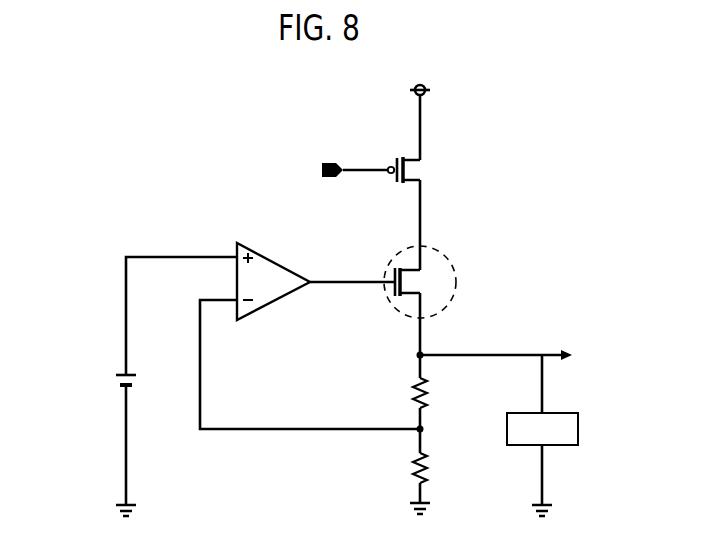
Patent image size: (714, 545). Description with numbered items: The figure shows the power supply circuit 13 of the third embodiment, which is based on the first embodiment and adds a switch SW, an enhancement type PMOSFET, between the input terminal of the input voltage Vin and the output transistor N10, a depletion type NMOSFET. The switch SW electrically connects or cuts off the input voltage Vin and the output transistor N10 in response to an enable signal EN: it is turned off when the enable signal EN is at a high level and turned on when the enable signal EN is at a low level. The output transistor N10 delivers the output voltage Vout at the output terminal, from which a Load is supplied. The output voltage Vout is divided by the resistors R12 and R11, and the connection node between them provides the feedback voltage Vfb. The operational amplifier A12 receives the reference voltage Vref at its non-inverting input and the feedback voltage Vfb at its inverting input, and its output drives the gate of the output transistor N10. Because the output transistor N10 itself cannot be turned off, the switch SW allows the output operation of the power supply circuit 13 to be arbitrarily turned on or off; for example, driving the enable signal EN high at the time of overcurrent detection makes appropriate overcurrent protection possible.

The power supply circuit 13 is at (52, 167).
The operational amplifier A12 is at (277, 260).
The switch SW is at (432, 213).
The output transistor N10 is at (394, 312).
The resistor R12 is at (449, 415).
The resistor R11 is at (448, 483).
The input voltage Vin is at (417, 111).
The output voltage Vout is at (517, 357).
The enable signal EN is at (353, 159).
The reference voltage Vref is at (170, 376).
The feedback voltage Vfb is at (310, 364).
The load Load is at (542, 435).